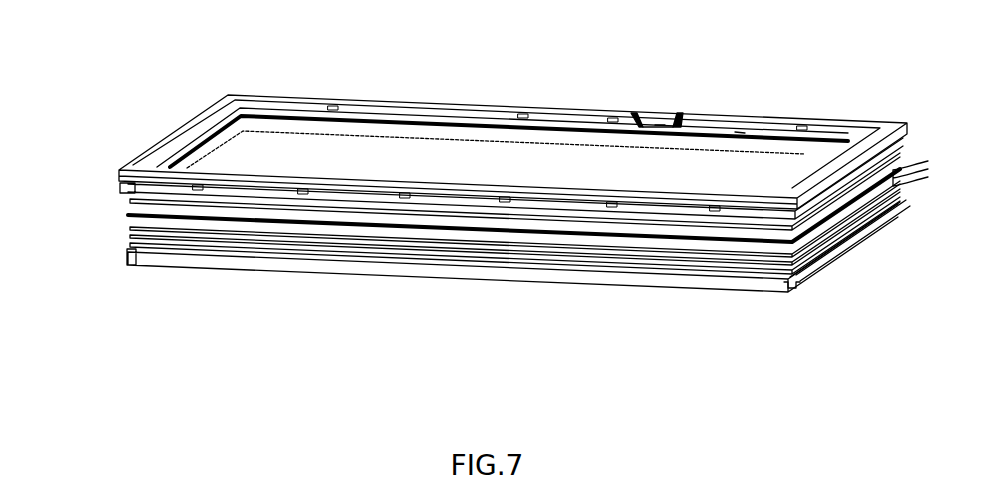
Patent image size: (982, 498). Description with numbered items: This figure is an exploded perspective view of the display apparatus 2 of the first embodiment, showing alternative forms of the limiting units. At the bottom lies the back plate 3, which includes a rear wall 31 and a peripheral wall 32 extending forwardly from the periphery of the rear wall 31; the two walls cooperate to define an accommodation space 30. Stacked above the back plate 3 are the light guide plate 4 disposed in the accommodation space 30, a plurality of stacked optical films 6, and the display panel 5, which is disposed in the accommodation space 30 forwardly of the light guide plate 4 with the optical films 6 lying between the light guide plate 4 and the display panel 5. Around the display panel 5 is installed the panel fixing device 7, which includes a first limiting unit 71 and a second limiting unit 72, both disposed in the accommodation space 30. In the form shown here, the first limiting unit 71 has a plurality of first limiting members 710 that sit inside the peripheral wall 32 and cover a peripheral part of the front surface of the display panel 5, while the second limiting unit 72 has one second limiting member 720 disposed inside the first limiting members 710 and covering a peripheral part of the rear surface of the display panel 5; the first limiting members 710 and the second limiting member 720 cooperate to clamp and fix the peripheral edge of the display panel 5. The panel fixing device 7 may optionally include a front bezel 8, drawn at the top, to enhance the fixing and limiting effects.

The display apparatus 2 is at (548, 285).
The back plate 3 is at (518, 289).
The rear wall 31 is at (750, 292).
The peripheral wall 32 is at (838, 262).
The light guide plate 4 is at (718, 265).
The display panel 5 is at (900, 157).
The stacked optical films 6 is at (927, 166).
The panel fixing device 7 is at (690, 93).
The first limiting unit 71 is at (682, 122).
The second limiting unit 72 is at (636, 112).
The first limiting member 710 is at (660, 125).
The second limiting member 720 is at (647, 137).
The front bezel 8 is at (826, 117).
The accommodation space 30 is at (453, 152).